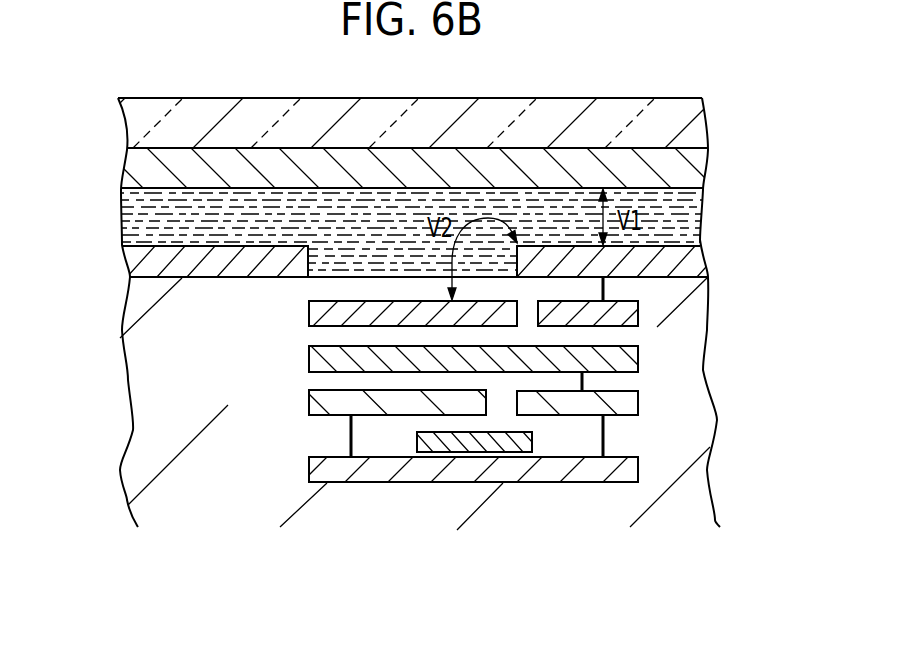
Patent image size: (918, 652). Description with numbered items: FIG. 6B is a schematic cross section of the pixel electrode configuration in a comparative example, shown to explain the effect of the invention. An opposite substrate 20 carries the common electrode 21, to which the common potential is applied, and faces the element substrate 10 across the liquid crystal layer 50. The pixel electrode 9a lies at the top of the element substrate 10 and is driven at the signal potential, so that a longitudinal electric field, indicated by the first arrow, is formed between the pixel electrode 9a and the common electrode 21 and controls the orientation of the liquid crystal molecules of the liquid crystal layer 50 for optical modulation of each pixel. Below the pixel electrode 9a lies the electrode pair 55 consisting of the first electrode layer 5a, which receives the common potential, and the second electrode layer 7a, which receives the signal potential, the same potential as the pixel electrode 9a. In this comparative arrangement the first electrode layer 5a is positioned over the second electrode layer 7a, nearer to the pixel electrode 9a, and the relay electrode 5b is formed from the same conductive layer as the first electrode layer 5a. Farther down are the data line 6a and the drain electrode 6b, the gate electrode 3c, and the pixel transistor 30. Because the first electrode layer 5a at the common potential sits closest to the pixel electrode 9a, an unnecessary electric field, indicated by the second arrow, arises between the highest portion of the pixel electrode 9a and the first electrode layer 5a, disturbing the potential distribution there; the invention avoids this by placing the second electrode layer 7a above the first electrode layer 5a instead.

The opposite substrate 20 is at (454, 103).
The common electrode 21 is at (701, 165).
The liquid crystal layer 50 is at (150, 210).
The pixel electrode 9a is at (153, 262).
The element substrate 10 is at (445, 411).
The electrode pair 55 is at (391, 344).
The first electrode layer 5a is at (313, 308).
The second electrode layer 7a is at (317, 357).
The relay electrode 5b is at (632, 312).
The data line 6a is at (393, 407).
The drain electrode 6b is at (632, 403).
The gate electrode 3c is at (452, 443).
The pixel transistor 30 is at (515, 484).